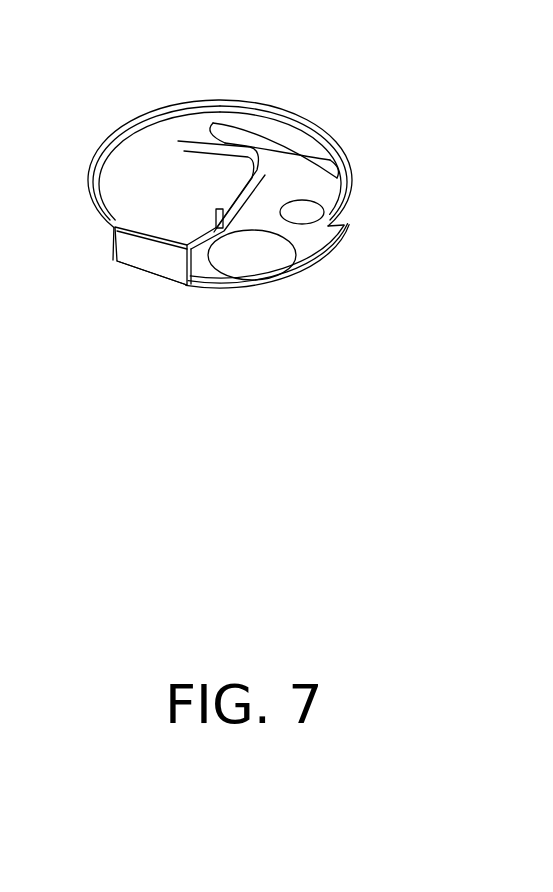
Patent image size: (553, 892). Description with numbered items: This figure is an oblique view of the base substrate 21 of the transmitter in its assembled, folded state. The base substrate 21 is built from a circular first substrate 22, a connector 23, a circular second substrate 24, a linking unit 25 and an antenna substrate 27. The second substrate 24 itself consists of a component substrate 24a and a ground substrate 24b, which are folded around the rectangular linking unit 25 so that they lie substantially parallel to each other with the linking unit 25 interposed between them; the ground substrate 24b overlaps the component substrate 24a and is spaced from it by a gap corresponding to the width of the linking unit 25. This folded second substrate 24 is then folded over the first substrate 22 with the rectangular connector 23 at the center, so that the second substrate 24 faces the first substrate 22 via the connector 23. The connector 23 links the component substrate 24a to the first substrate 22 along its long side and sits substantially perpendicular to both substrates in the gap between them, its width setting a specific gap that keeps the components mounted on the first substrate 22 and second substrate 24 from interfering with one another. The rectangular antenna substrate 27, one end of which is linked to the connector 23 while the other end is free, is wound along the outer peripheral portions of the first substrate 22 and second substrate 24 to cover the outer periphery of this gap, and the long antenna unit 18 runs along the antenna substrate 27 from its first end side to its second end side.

The antenna unit 18 is at (314, 139).
The base substrate 21 is at (378, 195).
The first substrate 22 is at (315, 240).
The connector 23 is at (130, 250).
The second substrate 24 is at (153, 168).
The component substrate 24a is at (184, 138).
The ground substrate 24b is at (230, 133).
The linking unit 25 is at (220, 212).
The antenna substrate 27 is at (307, 120).